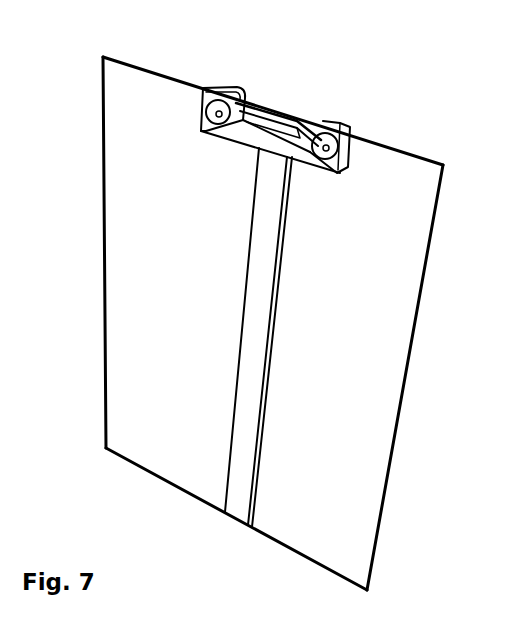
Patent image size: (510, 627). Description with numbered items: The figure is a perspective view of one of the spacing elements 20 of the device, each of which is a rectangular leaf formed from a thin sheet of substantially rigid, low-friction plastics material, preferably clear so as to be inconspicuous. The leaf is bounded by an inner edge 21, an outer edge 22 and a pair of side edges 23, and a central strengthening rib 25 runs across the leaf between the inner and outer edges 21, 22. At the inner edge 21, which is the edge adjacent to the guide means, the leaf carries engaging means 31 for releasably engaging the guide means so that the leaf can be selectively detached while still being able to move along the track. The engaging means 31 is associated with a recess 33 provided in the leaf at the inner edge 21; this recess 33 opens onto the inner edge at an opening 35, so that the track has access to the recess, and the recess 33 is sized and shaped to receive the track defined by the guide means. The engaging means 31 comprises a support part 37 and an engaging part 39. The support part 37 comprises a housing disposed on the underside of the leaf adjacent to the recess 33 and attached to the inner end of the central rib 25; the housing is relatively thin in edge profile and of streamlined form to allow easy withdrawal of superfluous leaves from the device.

The spacing element 20 is at (253, 332).
The inner edge 21 is at (410, 152).
The outer edge 22 is at (293, 556).
The side edges 23 is at (105, 294).
The central strengthening rib 25 is at (236, 483).
The engaging means 31 is at (293, 113).
The recess 33 is at (252, 108).
The opening 35 is at (307, 117).
The support part 37 is at (343, 122).
The engaging part 39 is at (205, 88).